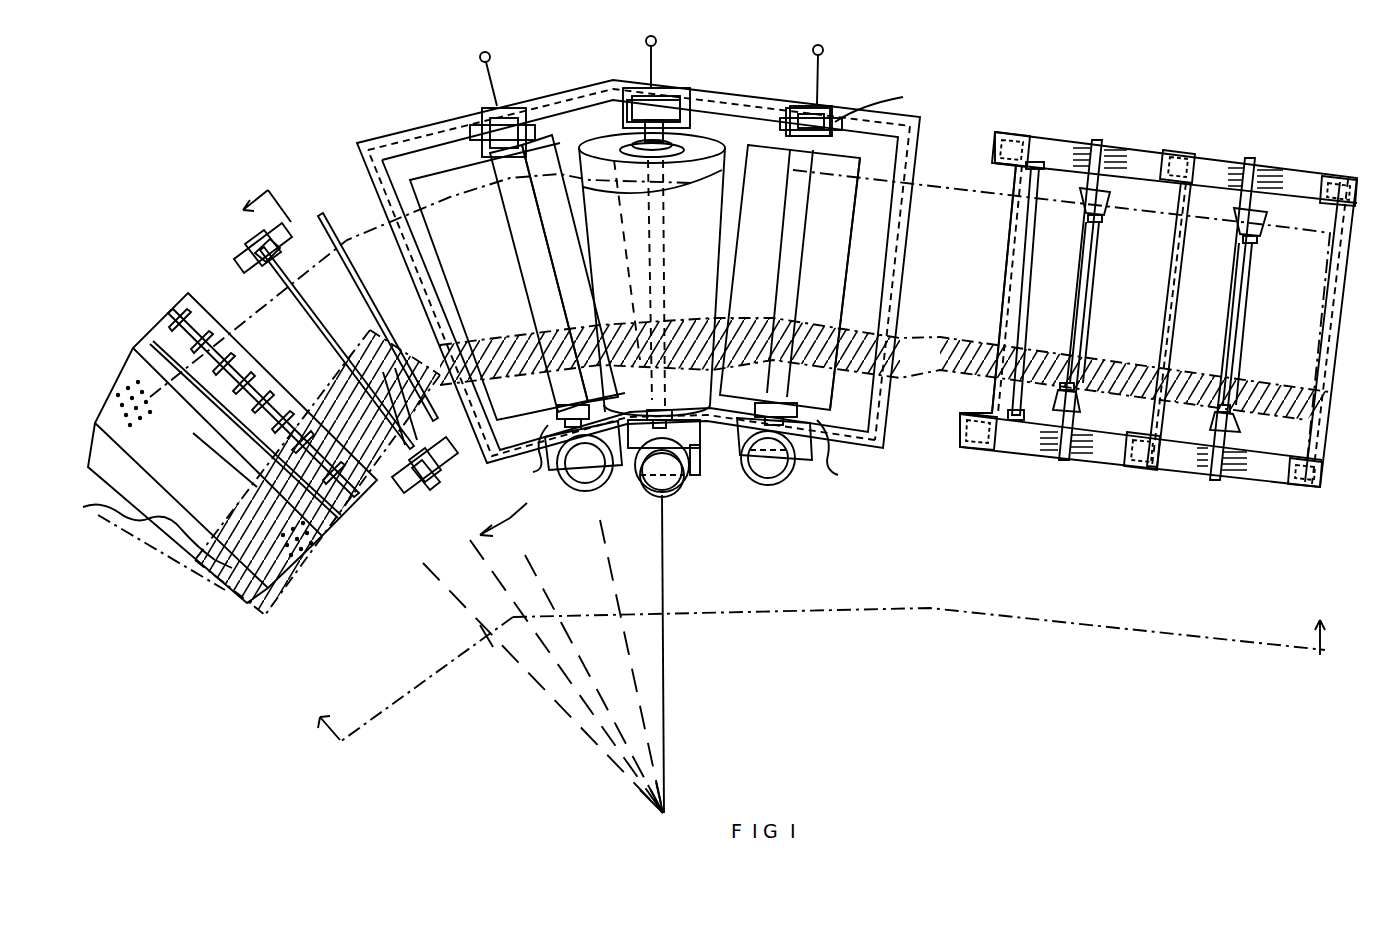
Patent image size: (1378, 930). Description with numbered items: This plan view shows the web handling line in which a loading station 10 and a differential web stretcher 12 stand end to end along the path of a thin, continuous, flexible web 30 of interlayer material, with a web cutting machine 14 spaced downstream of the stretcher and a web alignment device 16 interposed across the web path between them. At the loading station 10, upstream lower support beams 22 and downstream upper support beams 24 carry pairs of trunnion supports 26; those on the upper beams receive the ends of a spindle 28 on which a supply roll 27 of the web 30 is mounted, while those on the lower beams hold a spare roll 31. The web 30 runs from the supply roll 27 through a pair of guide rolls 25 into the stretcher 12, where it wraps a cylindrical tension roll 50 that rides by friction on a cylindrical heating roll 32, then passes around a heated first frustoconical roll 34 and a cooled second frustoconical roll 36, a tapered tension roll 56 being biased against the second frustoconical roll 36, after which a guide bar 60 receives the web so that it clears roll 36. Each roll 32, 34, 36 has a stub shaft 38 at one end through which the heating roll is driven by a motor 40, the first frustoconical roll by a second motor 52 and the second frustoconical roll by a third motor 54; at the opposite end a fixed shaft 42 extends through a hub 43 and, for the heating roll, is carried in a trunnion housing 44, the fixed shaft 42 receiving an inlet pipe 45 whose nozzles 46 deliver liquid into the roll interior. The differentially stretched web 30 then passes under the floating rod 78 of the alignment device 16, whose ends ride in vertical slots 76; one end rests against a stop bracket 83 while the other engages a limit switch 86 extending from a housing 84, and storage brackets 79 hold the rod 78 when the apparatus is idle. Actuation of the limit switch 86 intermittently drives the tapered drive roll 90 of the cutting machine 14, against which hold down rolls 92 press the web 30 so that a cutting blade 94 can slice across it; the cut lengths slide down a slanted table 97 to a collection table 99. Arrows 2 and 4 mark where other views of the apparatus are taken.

The section line 2- 2 is at (821, 693).
The section line 4- 4 is at (385, 357).
The loading station 10 is at (1087, 468).
The differential web stretcher 12 is at (852, 470).
The web cutting machine 14 is at (338, 575).
The web alignment device 16 is at (435, 505).
The upstream lower support beams 22 is at (1307, 178).
The downstream upper support beams 24 is at (1048, 148).
The guide rolls 25 is at (1034, 260).
The trunnion supports 26 is at (1112, 148).
The supply roll 27 is at (1106, 207).
The spindle 28 is at (1090, 312).
The continuous web 30 is at (437, 203).
The spare roll 31 is at (1280, 230).
The cylindrical heating roll 32 is at (832, 400).
The first frustoconical roll 34 is at (688, 95).
The second frustoconical roll 36 is at (545, 135).
The stub shaft 38 is at (557, 418).
The motor 40 is at (770, 478).
The fixed shaft 42 is at (505, 107).
The hub 43 is at (640, 140).
The trunnion housing 44 is at (530, 480).
The inlet pipe 45 is at (657, 212).
The nozzles 46 is at (665, 285).
The cylindrical tension roll 50 is at (805, 262).
The second motor 52 is at (668, 485).
The third motor 54 is at (585, 478).
The tapered tension roll 56 is at (490, 150).
The guide bar 60 is at (323, 210).
The vertical slot 76 is at (290, 280).
The floating rod 78 is at (337, 345).
The storage brackets 79 is at (415, 495).
The bracket 83 is at (250, 250).
The housing 84 is at (405, 378).
The limit switch 86 is at (415, 398).
The tapered drive roll 90 is at (175, 308).
The hold down rolls 92 is at (175, 320).
The cutting blade 94 is at (150, 340).
The slanted table 97 is at (100, 410).
The collection table 99 is at (278, 580).